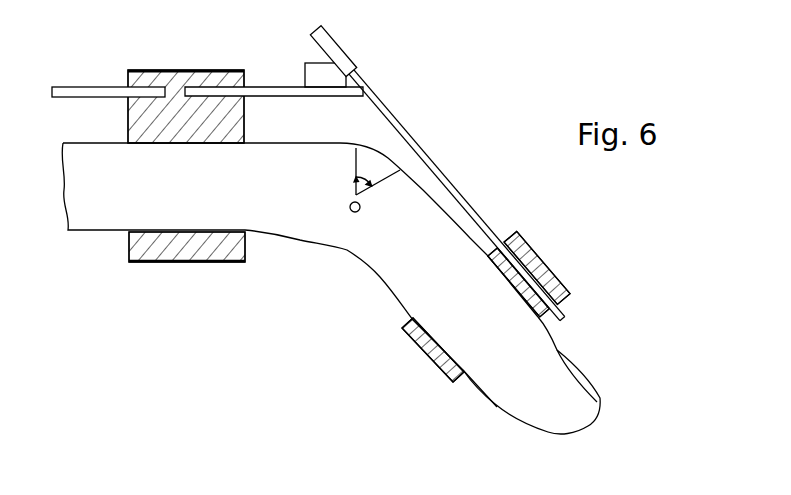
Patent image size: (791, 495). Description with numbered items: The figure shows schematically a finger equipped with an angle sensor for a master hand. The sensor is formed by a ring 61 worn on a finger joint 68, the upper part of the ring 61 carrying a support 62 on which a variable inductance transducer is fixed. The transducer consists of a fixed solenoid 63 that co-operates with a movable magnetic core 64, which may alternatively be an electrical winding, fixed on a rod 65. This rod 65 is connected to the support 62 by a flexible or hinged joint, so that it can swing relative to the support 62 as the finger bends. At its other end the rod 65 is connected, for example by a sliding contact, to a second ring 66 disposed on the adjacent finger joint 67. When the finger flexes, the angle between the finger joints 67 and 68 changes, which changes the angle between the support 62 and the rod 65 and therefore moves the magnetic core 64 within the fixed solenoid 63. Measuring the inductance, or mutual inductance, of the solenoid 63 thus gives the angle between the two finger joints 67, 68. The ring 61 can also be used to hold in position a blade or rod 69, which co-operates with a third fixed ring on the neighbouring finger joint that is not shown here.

The ring 61 is at (224, 248).
The support 62 is at (257, 91).
The fixed solenoid 63 is at (305, 64).
The movable magnetic core 64 is at (330, 46).
The rod 65 is at (461, 204).
The ring 66 is at (449, 372).
The finger joint 67 is at (415, 271).
The finger joint 68 is at (100, 215).
The blade or rod 69 is at (112, 91).